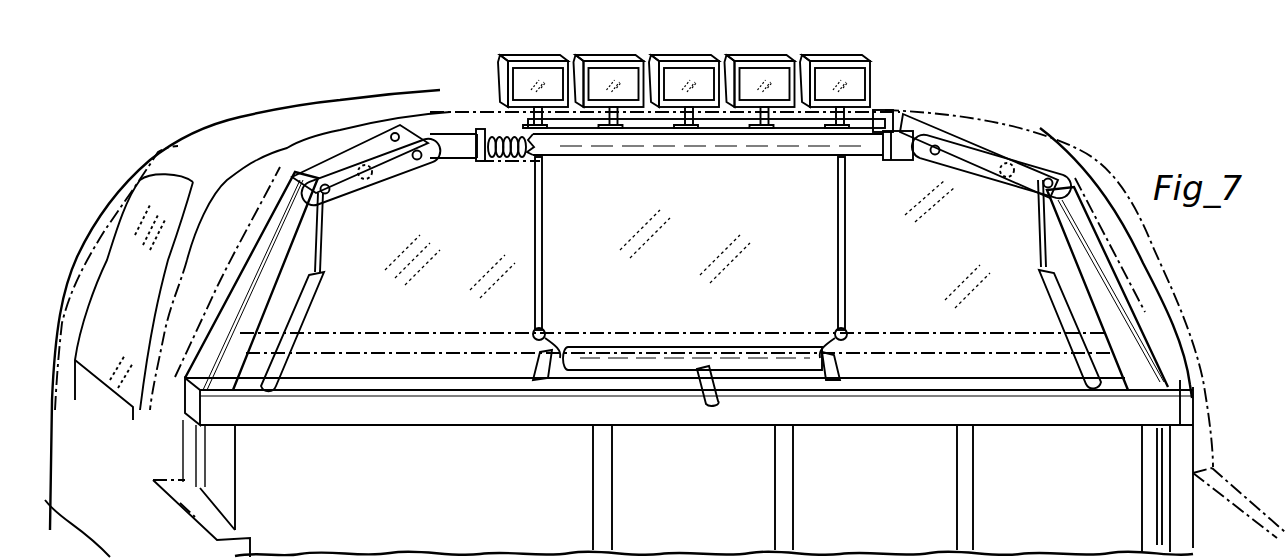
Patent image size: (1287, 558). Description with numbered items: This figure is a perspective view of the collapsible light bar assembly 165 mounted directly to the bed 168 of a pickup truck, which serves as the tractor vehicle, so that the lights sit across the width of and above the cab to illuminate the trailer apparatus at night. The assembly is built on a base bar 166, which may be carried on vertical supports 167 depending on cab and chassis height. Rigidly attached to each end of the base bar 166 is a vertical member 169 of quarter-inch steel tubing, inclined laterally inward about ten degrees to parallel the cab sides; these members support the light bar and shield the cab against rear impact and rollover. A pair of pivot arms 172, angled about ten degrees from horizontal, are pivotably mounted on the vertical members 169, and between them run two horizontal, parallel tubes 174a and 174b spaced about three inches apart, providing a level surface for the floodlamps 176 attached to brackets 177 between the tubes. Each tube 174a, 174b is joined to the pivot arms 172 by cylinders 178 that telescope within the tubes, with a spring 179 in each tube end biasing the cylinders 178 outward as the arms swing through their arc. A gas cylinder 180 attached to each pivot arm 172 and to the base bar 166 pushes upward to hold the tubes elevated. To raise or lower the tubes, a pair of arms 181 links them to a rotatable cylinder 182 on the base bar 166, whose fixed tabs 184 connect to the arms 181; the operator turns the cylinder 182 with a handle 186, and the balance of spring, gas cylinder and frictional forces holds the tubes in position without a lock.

The light bar assembly 165 is at (866, 432).
The base bar 166 is at (397, 413).
The vertical supports 167 is at (236, 483).
The bed 168 is at (558, 478).
The vertical member 169 is at (213, 343).
The pivot arms 172 is at (340, 152).
The tube 174a is at (723, 156).
The tube 174b is at (488, 112).
The lights 176 is at (563, 53).
The brackets 177 is at (873, 113).
The cylinders 178 is at (457, 153).
The spring 179 is at (513, 160).
The gas cylinder 180 is at (307, 320).
The arms 181 is at (542, 226).
The cylinder 182 is at (668, 358).
The tabs 184 is at (547, 338).
The handle 186 is at (700, 395).